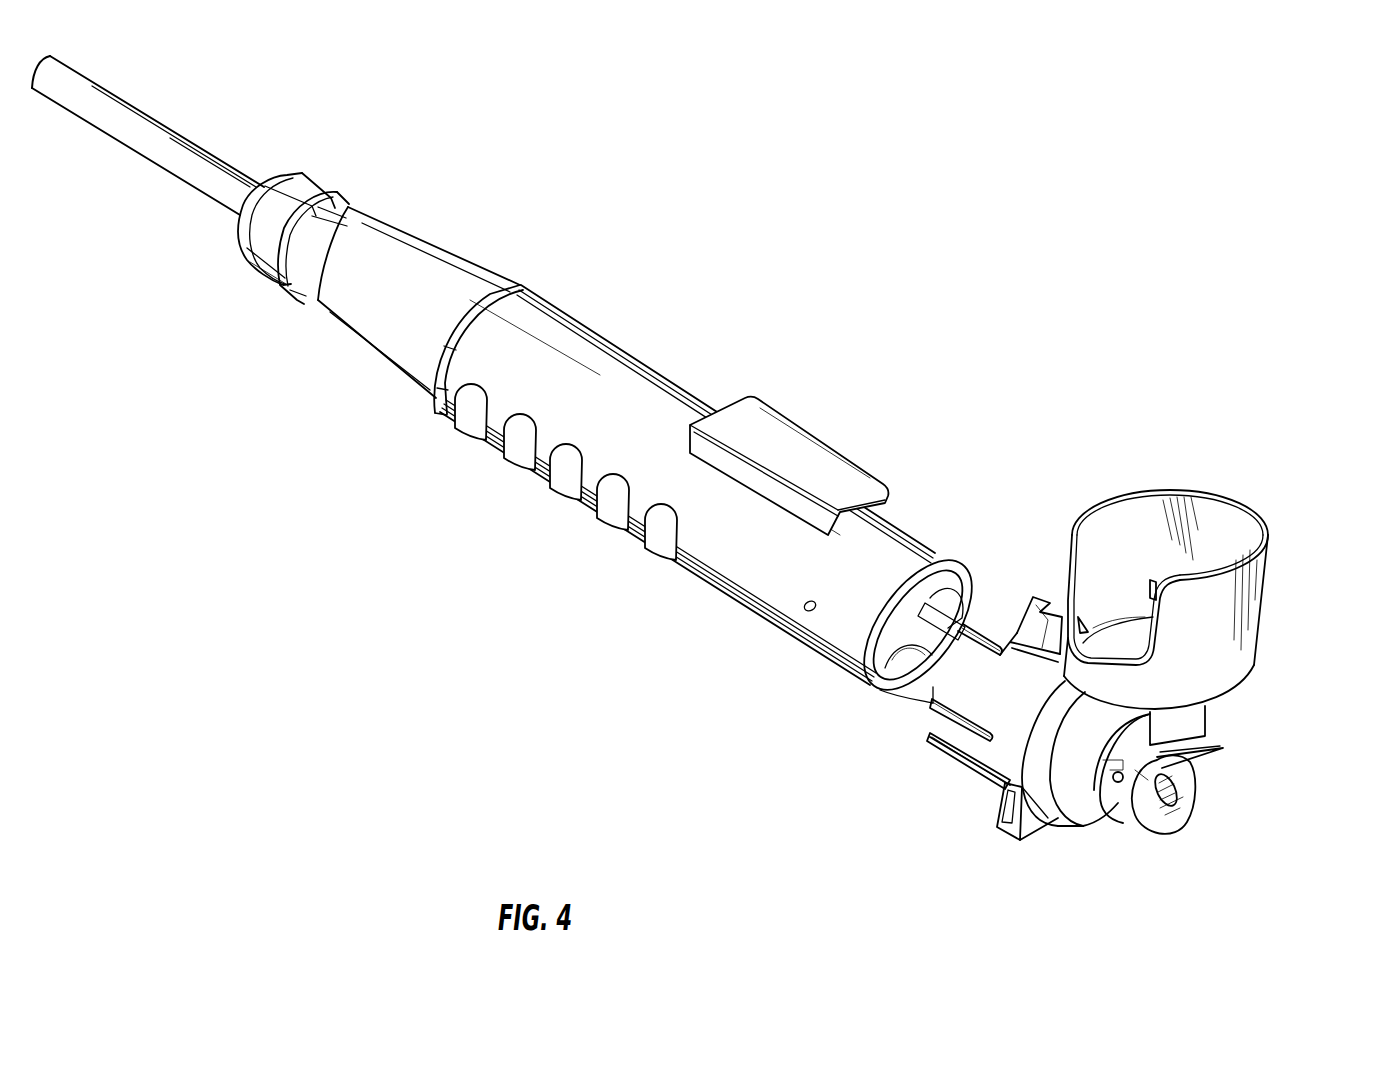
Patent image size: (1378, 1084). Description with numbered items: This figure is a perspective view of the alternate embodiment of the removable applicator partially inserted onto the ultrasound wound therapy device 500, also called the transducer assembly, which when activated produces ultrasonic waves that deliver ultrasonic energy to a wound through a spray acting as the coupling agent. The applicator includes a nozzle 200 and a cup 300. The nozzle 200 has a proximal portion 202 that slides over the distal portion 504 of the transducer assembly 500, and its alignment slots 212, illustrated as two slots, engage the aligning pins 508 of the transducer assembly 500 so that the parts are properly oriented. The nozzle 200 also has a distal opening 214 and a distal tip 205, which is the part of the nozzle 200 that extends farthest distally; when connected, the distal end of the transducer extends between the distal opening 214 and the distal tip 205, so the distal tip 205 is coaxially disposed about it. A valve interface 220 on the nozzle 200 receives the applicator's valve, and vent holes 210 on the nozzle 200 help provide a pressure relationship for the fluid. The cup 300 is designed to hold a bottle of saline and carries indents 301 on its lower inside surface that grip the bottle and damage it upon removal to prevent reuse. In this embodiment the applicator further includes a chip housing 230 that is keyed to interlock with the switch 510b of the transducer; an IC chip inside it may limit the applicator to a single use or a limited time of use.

The nozzle 200 is at (1083, 838).
The proximal portion 202 is at (940, 684).
The distal tip 205 is at (1170, 838).
The vent holes 210 is at (1112, 781).
The alignment slots 212 is at (940, 740).
The distal opening 214 is at (1180, 788).
The valve interface 220 is at (1146, 826).
The chip housing 230 is at (1050, 595).
The cup 300 is at (1276, 574).
The indents 301 is at (1150, 590).
The ultrasound wound therapy device 500 is at (549, 245).
The distal portion 504 is at (873, 688).
The aligning pins 508 is at (804, 607).
The switch 510b is at (793, 448).